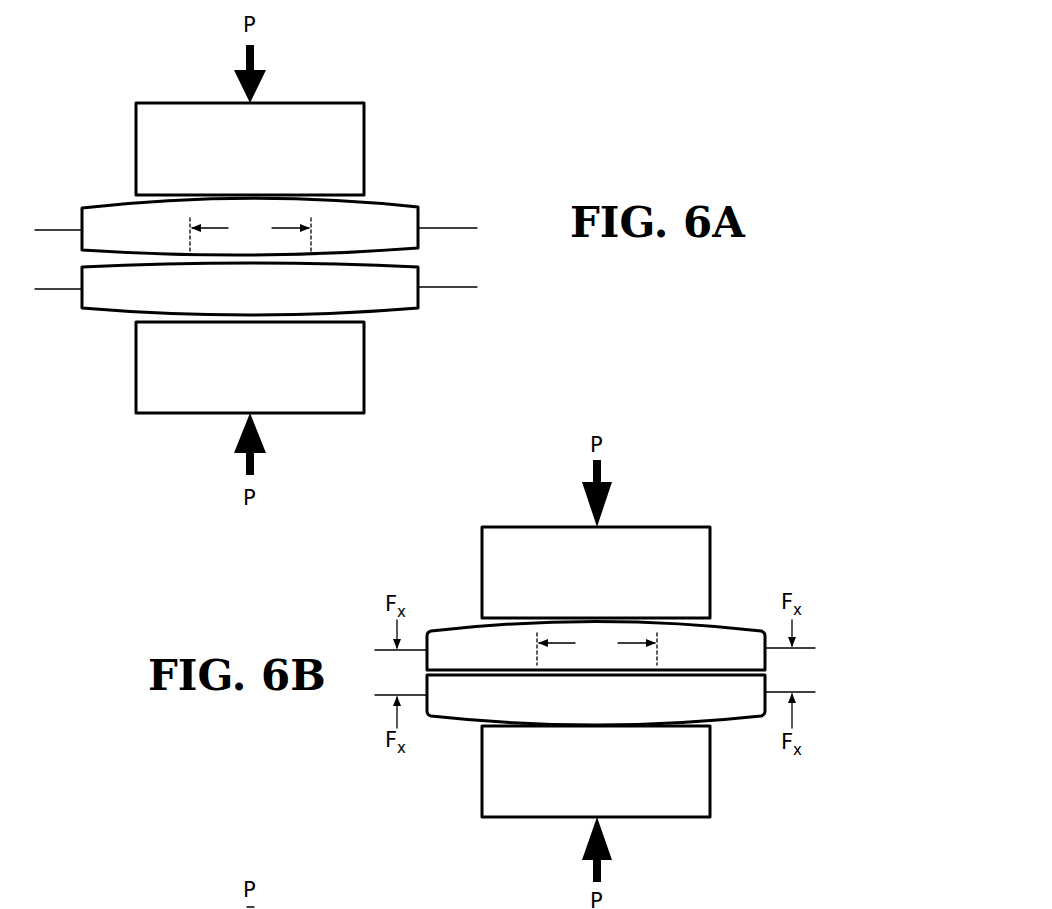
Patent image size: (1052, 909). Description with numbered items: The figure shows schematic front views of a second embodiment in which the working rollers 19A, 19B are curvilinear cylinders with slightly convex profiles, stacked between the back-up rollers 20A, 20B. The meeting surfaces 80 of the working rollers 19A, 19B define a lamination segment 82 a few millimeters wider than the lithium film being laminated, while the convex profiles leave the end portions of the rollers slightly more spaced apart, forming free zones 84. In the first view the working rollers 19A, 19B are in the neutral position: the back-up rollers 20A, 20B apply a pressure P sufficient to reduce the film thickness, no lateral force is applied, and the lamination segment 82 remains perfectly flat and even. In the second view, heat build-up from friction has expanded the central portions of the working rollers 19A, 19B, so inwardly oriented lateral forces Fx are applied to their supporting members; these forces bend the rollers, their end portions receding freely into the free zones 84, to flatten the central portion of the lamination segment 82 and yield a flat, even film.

In FIG. 6A, the working roller 19A is at (397, 293).
In FIG. 6B, the working roller 19A is at (737, 705).
In FIG. 6A, the working roller 19B is at (397, 222).
In FIG. 6B, the working roller 19B is at (737, 645).
In FIG. 6A, the back-up roller 20A is at (345, 365).
In FIG. 6B, the back-up roller 20A is at (680, 772).
In FIG. 6A, the back-up roller 20B is at (345, 145).
In FIG. 6B, the back-up roller 20B is at (680, 565).
In FIG. 6A, the meeting surfaces 80 is at (250, 258).
In FIG. 6A, the lamination segment 82 is at (250, 234).
In FIG. 6B, the lamination segment 82 is at (597, 648).
In FIG. 6A, the free zones 84 is at (420, 257).